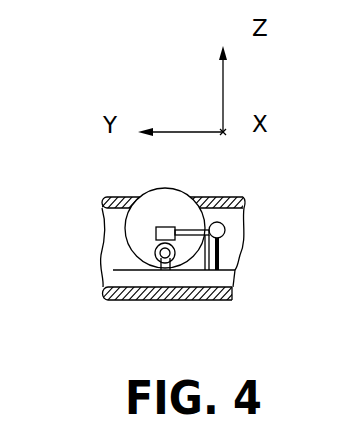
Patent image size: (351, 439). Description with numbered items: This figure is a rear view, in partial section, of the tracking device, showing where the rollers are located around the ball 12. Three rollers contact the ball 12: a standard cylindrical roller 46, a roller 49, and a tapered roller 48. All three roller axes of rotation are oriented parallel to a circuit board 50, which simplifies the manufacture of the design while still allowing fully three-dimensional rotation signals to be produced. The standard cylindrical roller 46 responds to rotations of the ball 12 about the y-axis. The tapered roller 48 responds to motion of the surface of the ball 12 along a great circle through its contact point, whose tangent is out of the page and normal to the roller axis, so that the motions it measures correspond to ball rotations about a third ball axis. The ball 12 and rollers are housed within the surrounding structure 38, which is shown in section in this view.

The ball 12 is at (127, 225).
The housing 38 is at (108, 198).
The standard cylindrical roller 46 is at (172, 233).
The tapered roller 48 is at (170, 256).
The roller 49 is at (224, 229).
The circuit board 50 is at (233, 272).